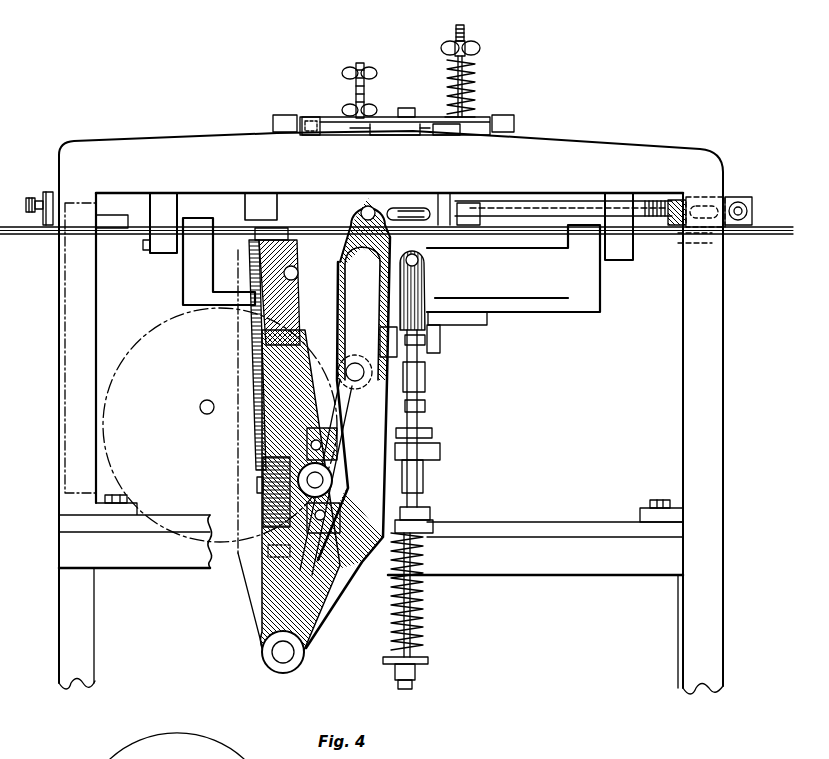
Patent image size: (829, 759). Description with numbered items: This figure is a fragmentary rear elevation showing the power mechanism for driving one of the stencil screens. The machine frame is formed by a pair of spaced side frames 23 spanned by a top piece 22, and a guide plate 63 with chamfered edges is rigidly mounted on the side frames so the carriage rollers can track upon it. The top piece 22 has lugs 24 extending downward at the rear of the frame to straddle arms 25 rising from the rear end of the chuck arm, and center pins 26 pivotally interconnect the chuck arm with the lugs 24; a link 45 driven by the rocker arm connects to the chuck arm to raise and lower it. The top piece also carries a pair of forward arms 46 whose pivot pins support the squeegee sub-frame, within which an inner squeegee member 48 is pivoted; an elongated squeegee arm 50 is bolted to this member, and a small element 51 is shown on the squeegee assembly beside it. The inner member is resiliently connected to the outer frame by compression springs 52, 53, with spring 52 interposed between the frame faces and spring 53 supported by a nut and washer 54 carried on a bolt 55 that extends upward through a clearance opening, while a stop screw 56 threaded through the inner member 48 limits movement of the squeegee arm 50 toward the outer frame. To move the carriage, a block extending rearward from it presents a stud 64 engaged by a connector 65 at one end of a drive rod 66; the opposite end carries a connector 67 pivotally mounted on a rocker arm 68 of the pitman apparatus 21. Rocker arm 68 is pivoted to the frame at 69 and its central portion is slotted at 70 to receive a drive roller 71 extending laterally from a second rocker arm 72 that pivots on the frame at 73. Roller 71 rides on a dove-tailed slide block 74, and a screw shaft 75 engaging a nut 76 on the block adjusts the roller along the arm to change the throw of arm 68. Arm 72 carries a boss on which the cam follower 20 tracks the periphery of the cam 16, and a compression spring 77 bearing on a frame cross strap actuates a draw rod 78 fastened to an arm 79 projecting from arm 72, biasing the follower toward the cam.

The cam 16 is at (148, 333).
The follower 20 is at (355, 398).
The pitman apparatus 21 is at (360, 449).
The top piece 22 is at (622, 144).
The side frame 23 is at (725, 333).
The lug 24 is at (157, 248).
The arm 25 is at (190, 286).
The center pin 26 is at (190, 235).
The link 45 is at (426, 410).
The arm 46 is at (276, 121).
The second squeegee member 48 is at (335, 118).
The squeegee arm 50 is at (411, 136).
The stop 51 is at (413, 112).
The compression spring 52 is at (453, 133).
The compression spring 53 is at (477, 85).
The nut and washer 54 is at (479, 49).
The bolt 55 is at (466, 28).
The stop screw 56 is at (363, 85).
The guide plate 63 is at (45, 232).
The stud 64 is at (749, 212).
The connector 65 is at (738, 200).
The drive rod 66 is at (566, 210).
The connector 67 is at (390, 204).
The rocker arm 68 is at (262, 610).
The pivot 69 is at (278, 652).
The slot 70 is at (283, 555).
The drive roller 71 is at (333, 487).
The rocker arm 72 is at (261, 358).
The pivot 73 is at (293, 266).
The slide block 74 is at (265, 470).
The screw shaft 75 is at (258, 446).
The nut 76 is at (261, 490).
The compression spring 77 is at (423, 613).
The draw rod 78 is at (425, 500).
The arm 79 is at (431, 276).